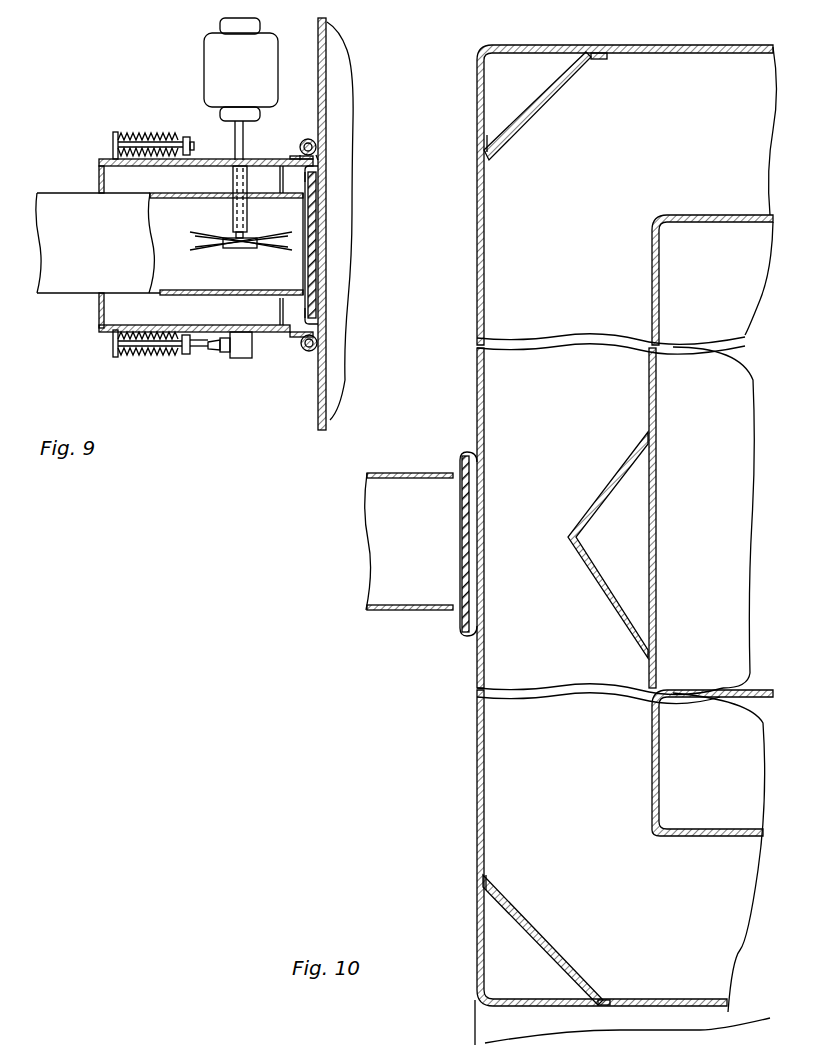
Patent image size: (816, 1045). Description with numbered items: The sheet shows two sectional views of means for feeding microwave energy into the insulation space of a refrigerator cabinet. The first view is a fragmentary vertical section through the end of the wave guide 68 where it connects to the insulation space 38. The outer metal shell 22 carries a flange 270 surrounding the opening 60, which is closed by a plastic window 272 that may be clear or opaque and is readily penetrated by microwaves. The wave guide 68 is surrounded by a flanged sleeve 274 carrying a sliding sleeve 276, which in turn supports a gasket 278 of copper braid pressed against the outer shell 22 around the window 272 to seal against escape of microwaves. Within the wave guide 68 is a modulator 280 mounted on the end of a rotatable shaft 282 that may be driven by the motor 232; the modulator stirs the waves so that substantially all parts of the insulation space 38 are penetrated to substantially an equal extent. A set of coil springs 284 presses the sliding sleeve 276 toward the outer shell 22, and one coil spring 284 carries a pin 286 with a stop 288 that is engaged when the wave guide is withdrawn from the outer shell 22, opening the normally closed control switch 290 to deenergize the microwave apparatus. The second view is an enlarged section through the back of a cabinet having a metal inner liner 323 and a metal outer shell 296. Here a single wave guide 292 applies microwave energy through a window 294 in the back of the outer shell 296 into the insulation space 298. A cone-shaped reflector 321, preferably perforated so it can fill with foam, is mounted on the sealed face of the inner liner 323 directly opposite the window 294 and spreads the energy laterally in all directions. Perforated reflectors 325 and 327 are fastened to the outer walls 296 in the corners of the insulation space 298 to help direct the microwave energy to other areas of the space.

In FIG. 9, the outer metal shell 22 is at (327, 40).
In FIG. 9, the insulation space 38 is at (345, 279).
In FIG. 9, the opening 60 is at (320, 283).
In FIG. 9, the wave guide 68 is at (63, 197).
In FIG. 9, the motor 232 is at (220, 24).
In FIG. 9, the flange 270 is at (318, 181).
In FIG. 9, the plastic window 272 is at (316, 241).
In FIG. 9, the flanged sleeve 274 is at (100, 307).
In FIG. 9, the sliding sleeve 276 is at (277, 333).
In FIG. 9, the gasket 278 is at (316, 350).
In FIG. 9, the modulator 280 is at (192, 236).
In FIG. 9, the rotatable shaft 282 is at (235, 130).
In FIG. 9, the coil springs 284 is at (133, 133).
In FIG. 9, the pin 286 is at (207, 348).
In FIG. 9, the stop 288 is at (187, 356).
In FIG. 9, the control switch 290 is at (242, 359).
In FIG. 10, the single wave guide 292 is at (385, 612).
In FIG. 10, the window 294 is at (470, 492).
In FIG. 10, the metal outer shell 296 is at (476, 796).
In FIG. 10, the insulation space 298 is at (507, 755).
In FIG. 10, the cone-shaped reflector 321 is at (600, 597).
In FIG. 10, the inner liner 323 is at (657, 492).
In FIG. 10, the perforated reflector 325 is at (535, 105).
In FIG. 10, the perforated reflector 327 is at (537, 942).